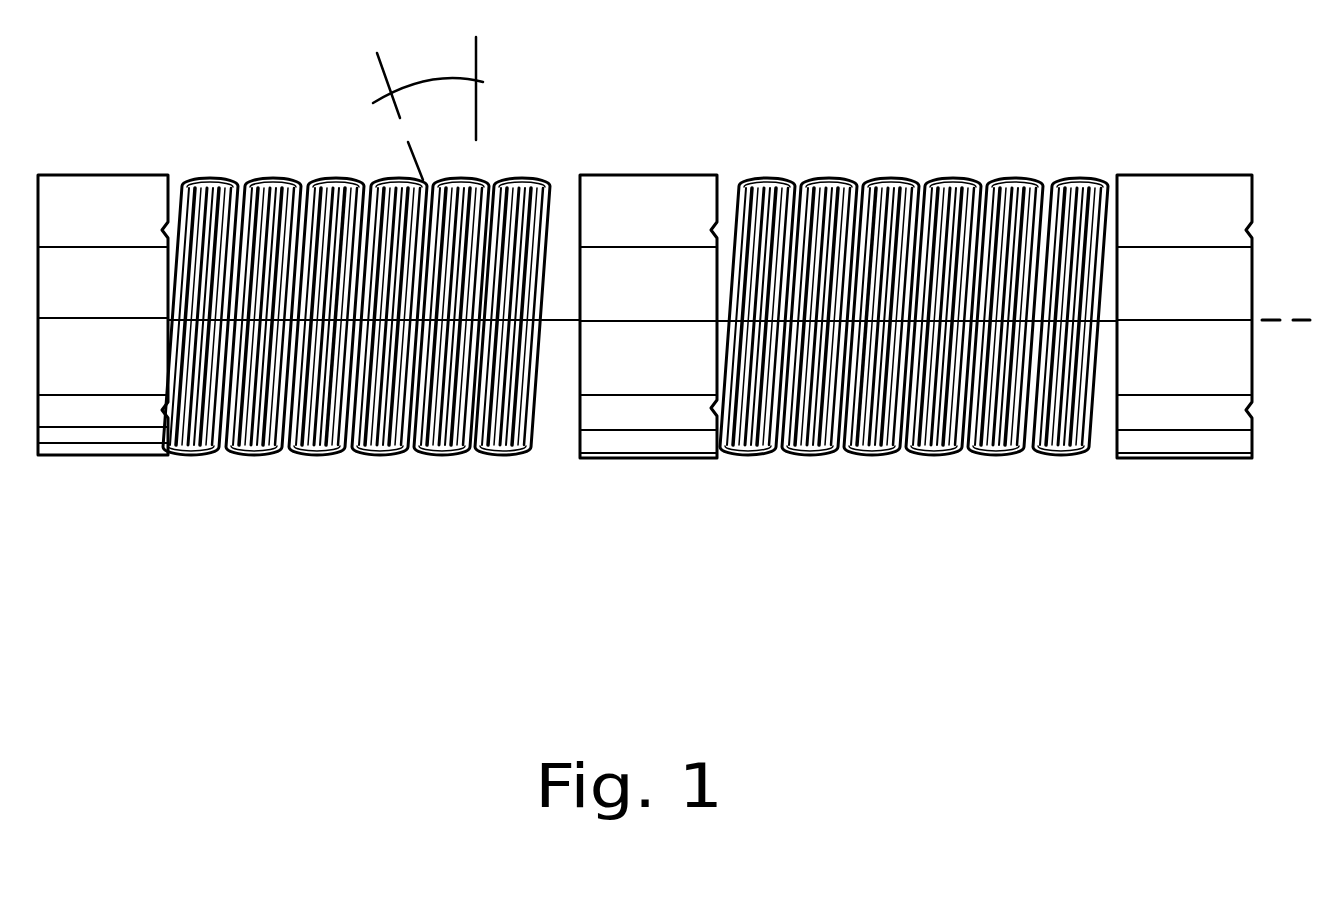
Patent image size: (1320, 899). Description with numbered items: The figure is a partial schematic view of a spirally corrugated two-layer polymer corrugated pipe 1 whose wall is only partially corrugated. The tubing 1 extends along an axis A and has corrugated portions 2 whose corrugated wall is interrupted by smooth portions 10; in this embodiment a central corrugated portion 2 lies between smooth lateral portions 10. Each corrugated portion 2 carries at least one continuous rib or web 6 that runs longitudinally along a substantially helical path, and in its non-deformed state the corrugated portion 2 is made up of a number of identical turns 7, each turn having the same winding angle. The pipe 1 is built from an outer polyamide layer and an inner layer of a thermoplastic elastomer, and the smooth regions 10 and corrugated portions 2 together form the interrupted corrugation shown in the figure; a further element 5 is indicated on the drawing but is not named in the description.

The corrugated pipe 1 is at (674, 324).
The corrugated portion 2 is at (942, 336).
The core wire 5 is at (1000, 463).
The continuous rib or web 6 is at (367, 340).
The turns 7 is at (487, 460).
The smooth regions 10 is at (630, 205).
The axis A is at (127, 318).